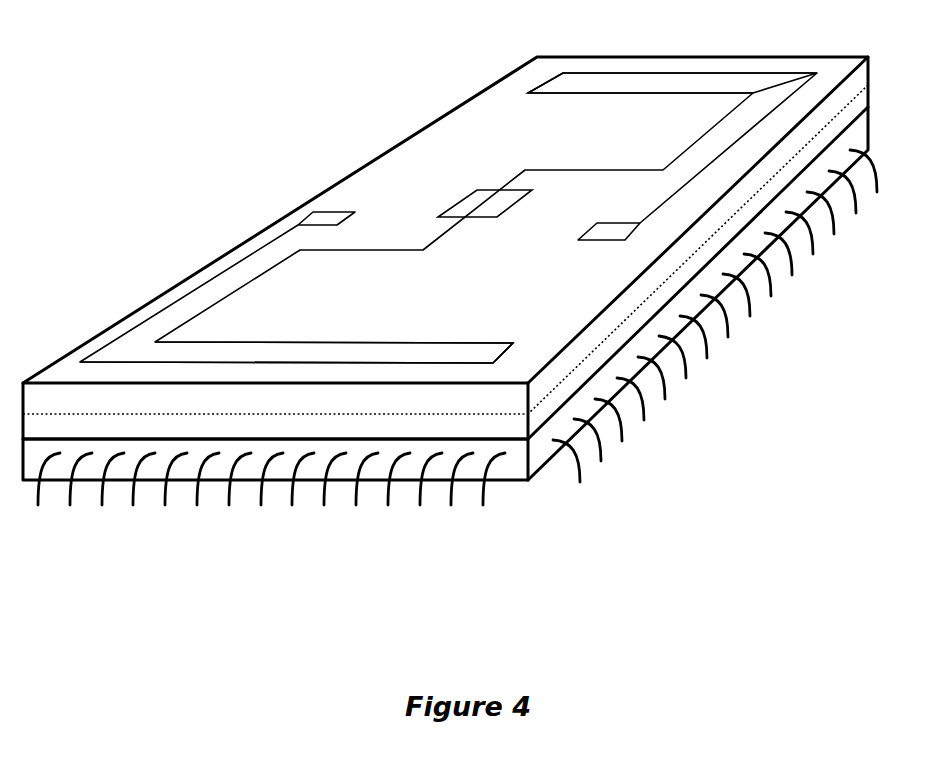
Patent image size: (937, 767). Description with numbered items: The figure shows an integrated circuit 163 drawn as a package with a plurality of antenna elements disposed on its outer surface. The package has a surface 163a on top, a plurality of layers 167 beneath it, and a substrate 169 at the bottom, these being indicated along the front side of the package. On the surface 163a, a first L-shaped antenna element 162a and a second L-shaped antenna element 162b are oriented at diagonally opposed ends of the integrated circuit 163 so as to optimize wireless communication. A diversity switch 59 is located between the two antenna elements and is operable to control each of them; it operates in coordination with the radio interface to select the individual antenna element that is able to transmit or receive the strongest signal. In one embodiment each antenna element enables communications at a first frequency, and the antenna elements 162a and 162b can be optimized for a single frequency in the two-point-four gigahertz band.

The integrated circuit 163 is at (294, 211).
The surface 163a is at (485, 149).
The first L-shaped antenna element 162a is at (373, 339).
The second L-shaped antenna element 162b is at (652, 96).
The diversity switch 59 is at (485, 203).
The plurality of layers 167 is at (308, 407).
The substrate 169 is at (308, 434).